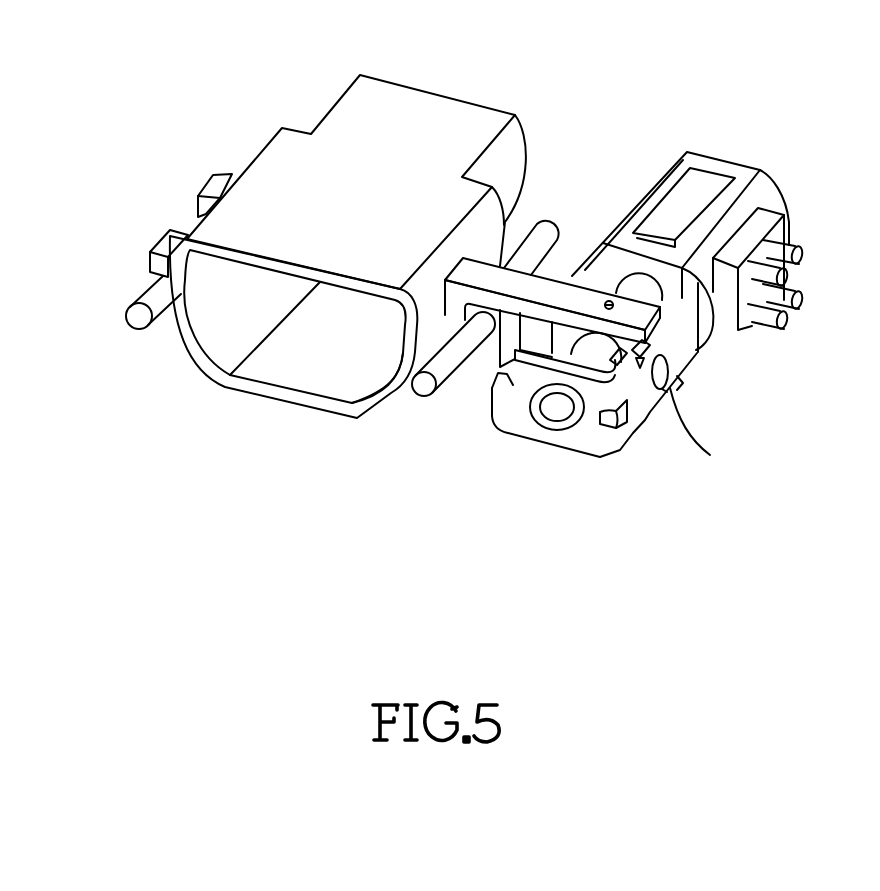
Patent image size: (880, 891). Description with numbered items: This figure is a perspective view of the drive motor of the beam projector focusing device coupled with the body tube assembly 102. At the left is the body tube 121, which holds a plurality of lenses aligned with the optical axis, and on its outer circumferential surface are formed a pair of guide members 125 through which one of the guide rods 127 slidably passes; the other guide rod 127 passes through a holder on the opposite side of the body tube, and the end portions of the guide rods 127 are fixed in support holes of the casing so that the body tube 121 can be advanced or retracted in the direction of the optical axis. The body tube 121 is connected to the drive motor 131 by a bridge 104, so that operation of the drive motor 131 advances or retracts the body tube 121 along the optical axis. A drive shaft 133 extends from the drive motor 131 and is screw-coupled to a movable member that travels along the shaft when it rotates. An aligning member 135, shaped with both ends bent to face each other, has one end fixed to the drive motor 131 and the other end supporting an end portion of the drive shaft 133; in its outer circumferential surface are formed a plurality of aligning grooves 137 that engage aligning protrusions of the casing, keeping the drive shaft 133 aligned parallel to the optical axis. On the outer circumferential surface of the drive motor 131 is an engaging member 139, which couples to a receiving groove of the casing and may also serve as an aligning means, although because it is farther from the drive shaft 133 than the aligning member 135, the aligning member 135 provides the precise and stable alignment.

The body tube assembly 102 is at (282, 118).
The bridge 104 is at (548, 283).
The body tube 121 is at (358, 108).
The guide members 125 is at (210, 185).
The guide rods 127 is at (153, 295).
The drive motor 131 is at (695, 183).
The drive shaft 133 is at (590, 355).
The aligning member 135 is at (688, 358).
The aligning grooves 137 is at (705, 338).
The engaging member 139 is at (767, 220).